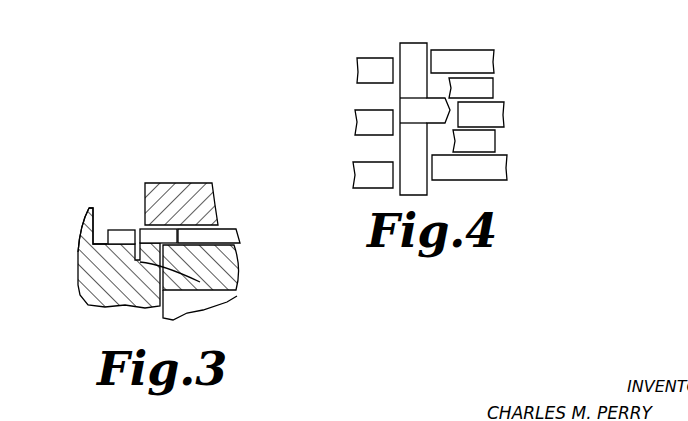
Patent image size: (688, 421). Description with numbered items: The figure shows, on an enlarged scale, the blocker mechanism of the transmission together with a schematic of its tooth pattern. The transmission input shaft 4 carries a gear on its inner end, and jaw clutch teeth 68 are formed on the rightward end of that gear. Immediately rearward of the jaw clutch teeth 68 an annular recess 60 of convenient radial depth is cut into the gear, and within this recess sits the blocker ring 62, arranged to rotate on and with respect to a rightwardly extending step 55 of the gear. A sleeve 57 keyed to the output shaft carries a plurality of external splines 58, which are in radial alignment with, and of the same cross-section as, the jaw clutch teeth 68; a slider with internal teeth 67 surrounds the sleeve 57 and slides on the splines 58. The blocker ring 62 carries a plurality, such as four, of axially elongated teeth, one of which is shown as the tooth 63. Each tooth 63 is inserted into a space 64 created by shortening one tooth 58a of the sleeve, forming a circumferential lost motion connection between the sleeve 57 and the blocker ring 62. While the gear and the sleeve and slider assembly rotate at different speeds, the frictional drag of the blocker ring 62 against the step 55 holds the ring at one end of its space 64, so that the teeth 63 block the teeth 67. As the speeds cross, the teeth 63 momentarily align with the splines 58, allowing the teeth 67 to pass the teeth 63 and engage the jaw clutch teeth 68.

In FIG. 3, the transmission input shaft 4 is at (88, 285).
In FIG. 3, the step 55 is at (201, 283).
In FIG. 3, the sleeve 57 is at (230, 267).
In FIG. 4, the external splines 58 is at (473, 56).
In FIG. 4, the shortened tooth 58a is at (500, 113).
In FIG. 3, the annular recess 60 is at (90, 254).
In FIG. 3, the blocker ring 62 is at (148, 263).
In FIG. 4, the blocker ring 62 is at (413, 52).
In FIG. 3, the axially elongated tooth 63 is at (156, 233).
In FIG. 4, the axially elongated tooth 63 is at (437, 117).
In FIG. 4, the space 64 is at (437, 142).
In FIG. 3, the internal teeth 67 is at (213, 233).
In FIG. 4, the internal teeth 67 is at (485, 87).
In FIG. 3, the jaw clutch teeth 68 is at (122, 232).
In FIG. 4, the jaw clutch teeth 68 is at (362, 68).